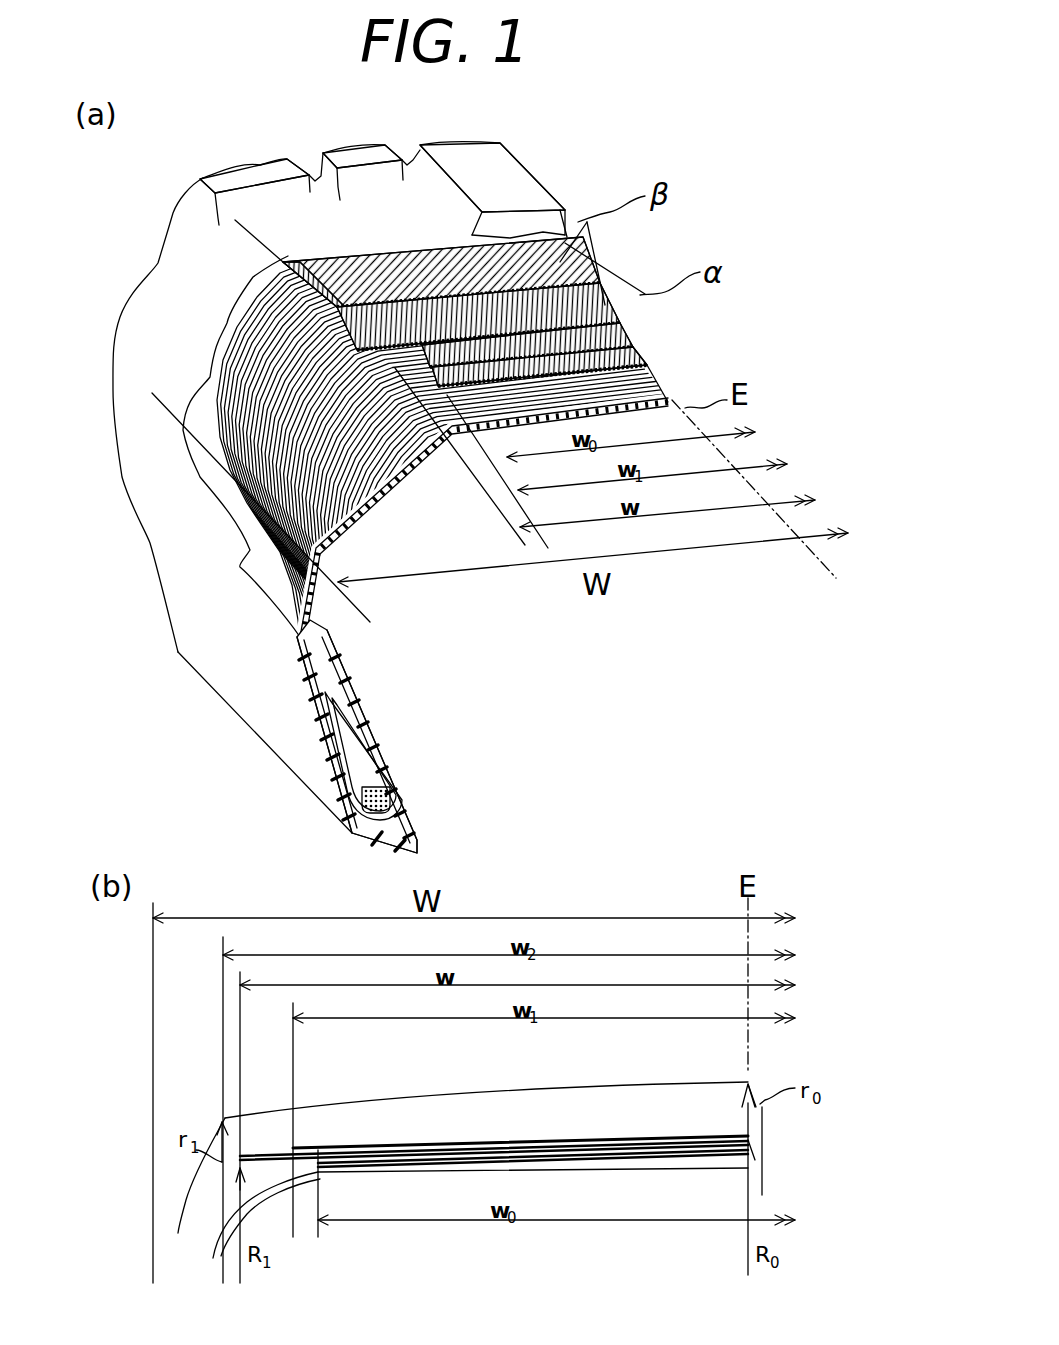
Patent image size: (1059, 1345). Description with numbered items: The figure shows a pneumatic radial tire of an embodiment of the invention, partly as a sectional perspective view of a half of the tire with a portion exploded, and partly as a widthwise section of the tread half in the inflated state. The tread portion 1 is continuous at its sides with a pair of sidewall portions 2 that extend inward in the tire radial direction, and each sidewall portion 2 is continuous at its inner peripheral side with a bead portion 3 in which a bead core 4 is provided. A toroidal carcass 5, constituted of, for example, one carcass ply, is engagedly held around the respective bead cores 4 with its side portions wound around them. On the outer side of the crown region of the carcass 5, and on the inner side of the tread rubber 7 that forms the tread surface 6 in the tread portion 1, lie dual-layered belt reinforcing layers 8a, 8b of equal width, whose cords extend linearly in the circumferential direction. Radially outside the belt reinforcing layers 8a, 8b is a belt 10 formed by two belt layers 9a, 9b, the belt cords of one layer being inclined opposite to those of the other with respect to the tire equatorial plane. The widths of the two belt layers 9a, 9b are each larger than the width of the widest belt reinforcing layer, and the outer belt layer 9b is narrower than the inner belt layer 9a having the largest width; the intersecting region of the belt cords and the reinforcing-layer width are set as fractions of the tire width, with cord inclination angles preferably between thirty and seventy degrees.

The tread portion 1 is at (252, 152).
The sidewall portion 2 is at (158, 290).
The bead portion 3 is at (192, 605).
The bead core 4 is at (392, 798).
The carcass 5 is at (273, 417).
The tread surface 6 is at (488, 155).
The tread rubber 7 is at (416, 228).
The belt reinforcing layer 8a is at (652, 361).
The belt reinforcing layer 8b is at (638, 333).
The belt layer 9a is at (313, 293).
The belt layer 9b is at (283, 262).
The belt 10 is at (520, 250).